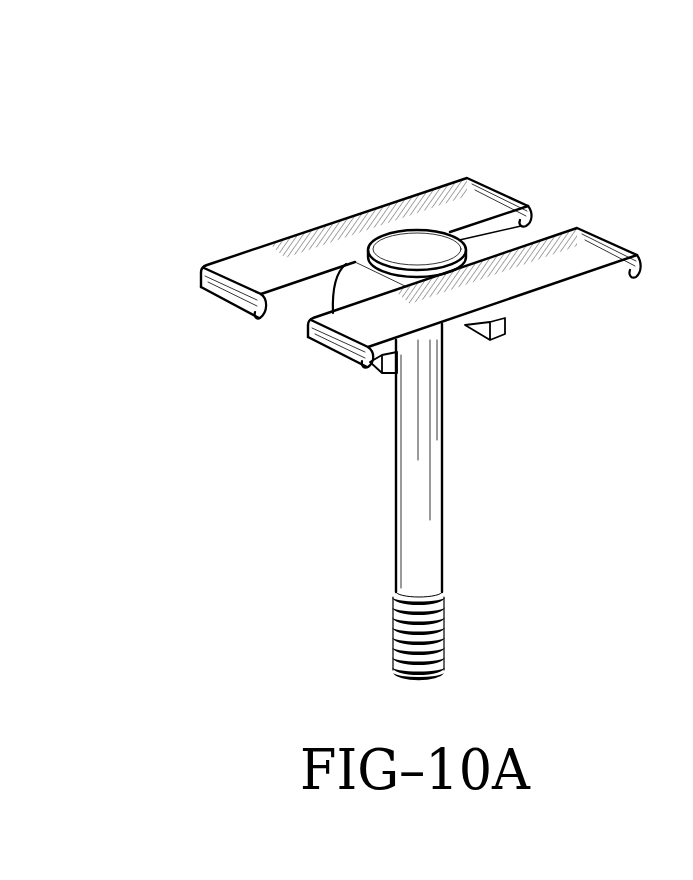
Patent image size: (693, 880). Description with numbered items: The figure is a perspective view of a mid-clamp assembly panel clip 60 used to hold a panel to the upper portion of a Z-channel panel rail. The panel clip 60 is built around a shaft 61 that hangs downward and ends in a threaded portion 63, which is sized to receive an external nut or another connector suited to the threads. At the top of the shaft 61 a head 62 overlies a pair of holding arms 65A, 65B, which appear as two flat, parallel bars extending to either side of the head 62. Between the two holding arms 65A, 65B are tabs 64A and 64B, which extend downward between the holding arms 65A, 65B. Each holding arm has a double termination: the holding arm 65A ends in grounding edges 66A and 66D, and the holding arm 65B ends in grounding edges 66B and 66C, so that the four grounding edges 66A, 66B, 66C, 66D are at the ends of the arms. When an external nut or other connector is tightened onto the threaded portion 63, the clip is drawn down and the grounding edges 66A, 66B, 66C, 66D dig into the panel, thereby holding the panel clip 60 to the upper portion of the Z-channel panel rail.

The panel clip 60 is at (299, 130).
The shaft 61 is at (412, 487).
The head 62 is at (410, 245).
The threaded portion 63 is at (437, 622).
The tab 64A is at (393, 365).
The tab 64B is at (500, 328).
The holding arm 65A is at (303, 257).
The holding arm 65B is at (566, 285).
The grounding edge 66A is at (230, 296).
The grounding edge 66B is at (338, 349).
The grounding edge 66C is at (602, 243).
The grounding edge 66D is at (487, 192).